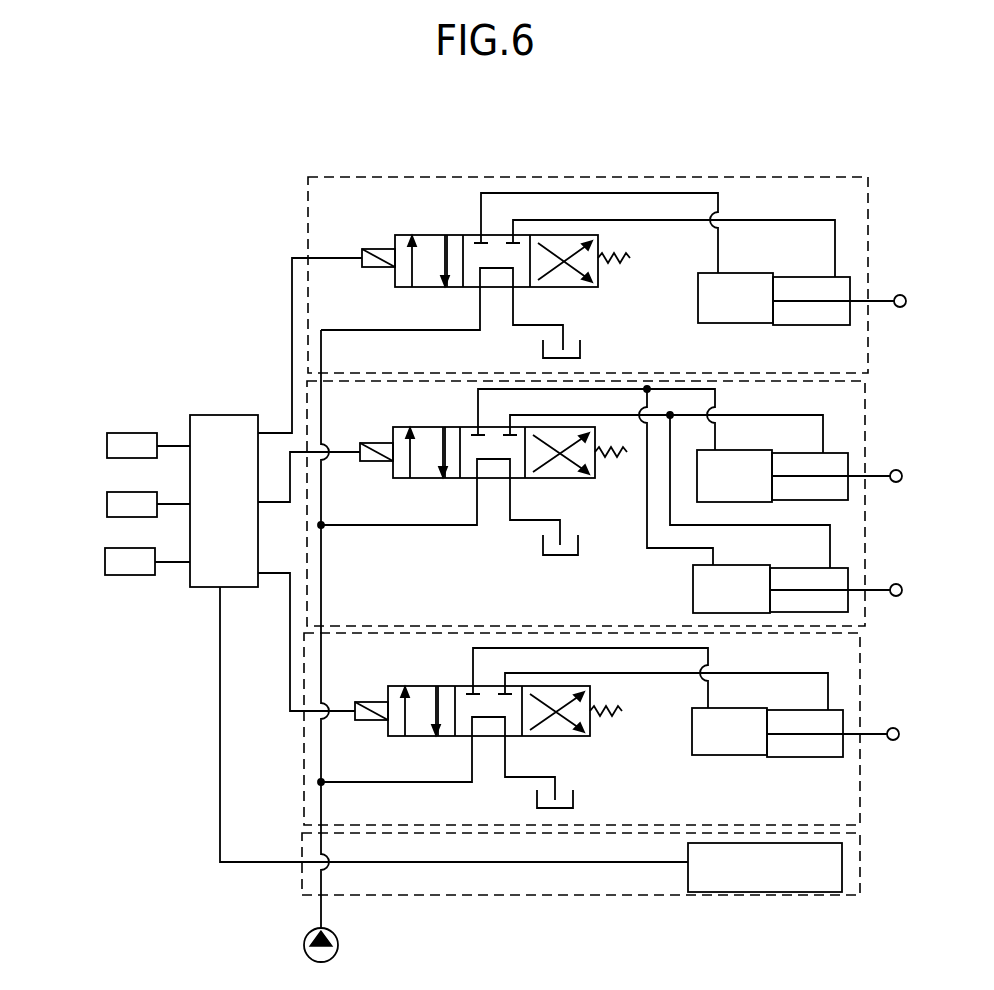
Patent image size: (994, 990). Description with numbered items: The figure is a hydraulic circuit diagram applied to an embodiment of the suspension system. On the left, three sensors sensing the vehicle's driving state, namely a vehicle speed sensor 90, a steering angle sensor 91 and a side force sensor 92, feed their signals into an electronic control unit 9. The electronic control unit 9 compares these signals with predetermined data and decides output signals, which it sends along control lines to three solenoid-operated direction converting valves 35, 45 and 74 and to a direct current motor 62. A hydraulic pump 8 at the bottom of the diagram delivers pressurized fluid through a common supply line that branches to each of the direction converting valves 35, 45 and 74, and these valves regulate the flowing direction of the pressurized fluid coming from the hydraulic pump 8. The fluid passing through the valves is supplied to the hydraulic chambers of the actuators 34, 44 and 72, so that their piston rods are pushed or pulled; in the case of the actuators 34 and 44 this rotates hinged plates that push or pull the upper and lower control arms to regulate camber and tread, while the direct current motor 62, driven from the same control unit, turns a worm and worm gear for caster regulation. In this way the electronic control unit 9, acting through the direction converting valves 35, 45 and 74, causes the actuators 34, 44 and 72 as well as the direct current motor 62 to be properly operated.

The hydraulic pump 8 is at (339, 947).
The electronic control unit 9 is at (215, 520).
The actuator 34 is at (750, 323).
The direction converting valve 35 is at (396, 221).
The actuator 44 is at (838, 450).
The direction converting valve 45 is at (394, 424).
The direct current motor 62 is at (688, 847).
The actuator 72 is at (750, 755).
The direction converting valve 74 is at (414, 676).
The vehicle speed sensor 90 is at (107, 445).
The steering angle sensor 91 is at (107, 504).
The side force sensor 92 is at (105, 562).